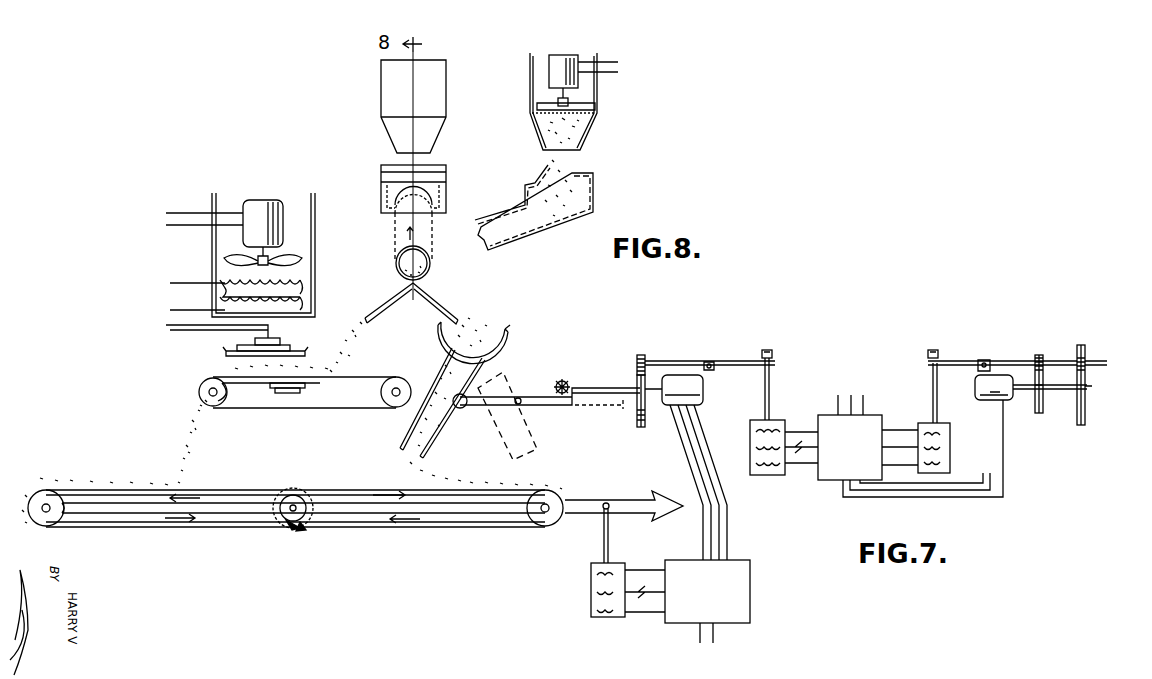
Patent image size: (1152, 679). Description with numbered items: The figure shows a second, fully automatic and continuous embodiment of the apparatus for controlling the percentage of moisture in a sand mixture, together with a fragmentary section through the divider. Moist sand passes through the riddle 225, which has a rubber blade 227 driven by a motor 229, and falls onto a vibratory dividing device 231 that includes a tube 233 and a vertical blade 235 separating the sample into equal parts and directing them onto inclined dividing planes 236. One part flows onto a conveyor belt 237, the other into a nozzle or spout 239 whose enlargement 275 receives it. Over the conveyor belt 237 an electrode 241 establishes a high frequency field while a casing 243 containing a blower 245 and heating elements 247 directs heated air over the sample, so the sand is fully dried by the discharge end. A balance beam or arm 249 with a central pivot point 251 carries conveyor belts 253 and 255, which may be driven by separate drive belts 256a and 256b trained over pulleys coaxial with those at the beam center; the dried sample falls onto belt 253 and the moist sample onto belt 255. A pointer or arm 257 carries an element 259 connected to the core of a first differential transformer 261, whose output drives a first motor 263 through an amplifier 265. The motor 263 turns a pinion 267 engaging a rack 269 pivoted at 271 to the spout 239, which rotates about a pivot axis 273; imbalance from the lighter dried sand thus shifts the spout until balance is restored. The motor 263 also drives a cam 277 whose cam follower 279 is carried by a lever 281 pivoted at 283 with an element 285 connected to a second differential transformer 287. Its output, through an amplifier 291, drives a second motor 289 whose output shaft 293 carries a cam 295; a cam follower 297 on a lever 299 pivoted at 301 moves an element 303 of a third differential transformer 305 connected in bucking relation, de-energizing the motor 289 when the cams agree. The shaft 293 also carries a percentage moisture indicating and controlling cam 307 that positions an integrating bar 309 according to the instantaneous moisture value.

In FIG. 8, the riddle 225 is at (595, 118).
In FIG. 8, the rubber blade 227 is at (587, 98).
In FIG. 8, the motor 229 is at (566, 57).
In FIG. 8, the vibratory dividing device 231 is at (552, 234).
In FIG. 7, the vibratory dividing device 231 is at (456, 186).
In FIG. 8, the tube 233 is at (500, 248).
In FIG. 7, the tube 233 is at (396, 242).
In FIG. 7, the vertical blade 235 is at (398, 268).
In FIG. 7, the inclined dividing planes 236 is at (438, 308).
In FIG. 7, the conveyor belt 237 is at (377, 378).
In FIG. 7, the nozzle or spout 239 is at (430, 435).
In FIG. 7, the electrode 241 is at (228, 351).
In FIG. 7, the casing 243 is at (212, 256).
In FIG. 7, the blower 245 is at (283, 202).
In FIG. 7, the heating elements 247 is at (305, 302).
In FIG. 7, the balance beam or arm 249 is at (358, 512).
In FIG. 7, the central pivot point 251 is at (299, 528).
In FIG. 7, the conveyor belt 253 is at (234, 489).
In FIG. 7, the conveyor belt 255 is at (345, 489).
In FIG. 7, the drive belt 256a is at (270, 578).
In FIG. 7, the drive belt 256b is at (295, 530).
In FIG. 7, the pointer or arm 257 is at (626, 503).
In FIG. 7, the element 259 is at (608, 553).
In FIG. 7, the first differential transformer 261 is at (590, 600).
In FIG. 7, the first motor 263 is at (678, 375).
In FIG. 7, the amplifier 265 is at (748, 617).
In FIG. 7, the pinion 267 is at (563, 380).
In FIG. 7, the rack 269 is at (575, 408).
In FIG. 7, the pivot 271 is at (463, 395).
In FIG. 7, the pivot axis 273 is at (478, 332).
In FIG. 7, the enlargement 275 is at (506, 346).
In FIG. 7, the cam 277 is at (640, 416).
In FIG. 7, the cam follower 279 is at (637, 362).
In FIG. 7, the lever 281 is at (660, 361).
In FIG. 7, the pivot 283 is at (711, 362).
In FIG. 7, the element 285 is at (769, 392).
In FIG. 7, the second differential transformer 287 is at (752, 475).
In FIG. 7, the second motor 289 is at (1000, 375).
In FIG. 7, the amplifier 291 is at (857, 432).
In FIG. 7, the output shaft 293 is at (1062, 392).
In FIG. 7, the cam 295 is at (1038, 402).
In FIG. 7, the cam follower 297 is at (1042, 357).
In FIG. 7, the lever 299 is at (1022, 361).
In FIG. 7, the pivot 301 is at (982, 360).
In FIG. 7, the element 303 is at (945, 400).
In FIG. 7, the third differential transformer 305 is at (950, 440).
In FIG. 7, the percentage moisture indicating and controlling cam 307 is at (1085, 415).
In FIG. 7, the integrating bar 309 is at (1095, 361).